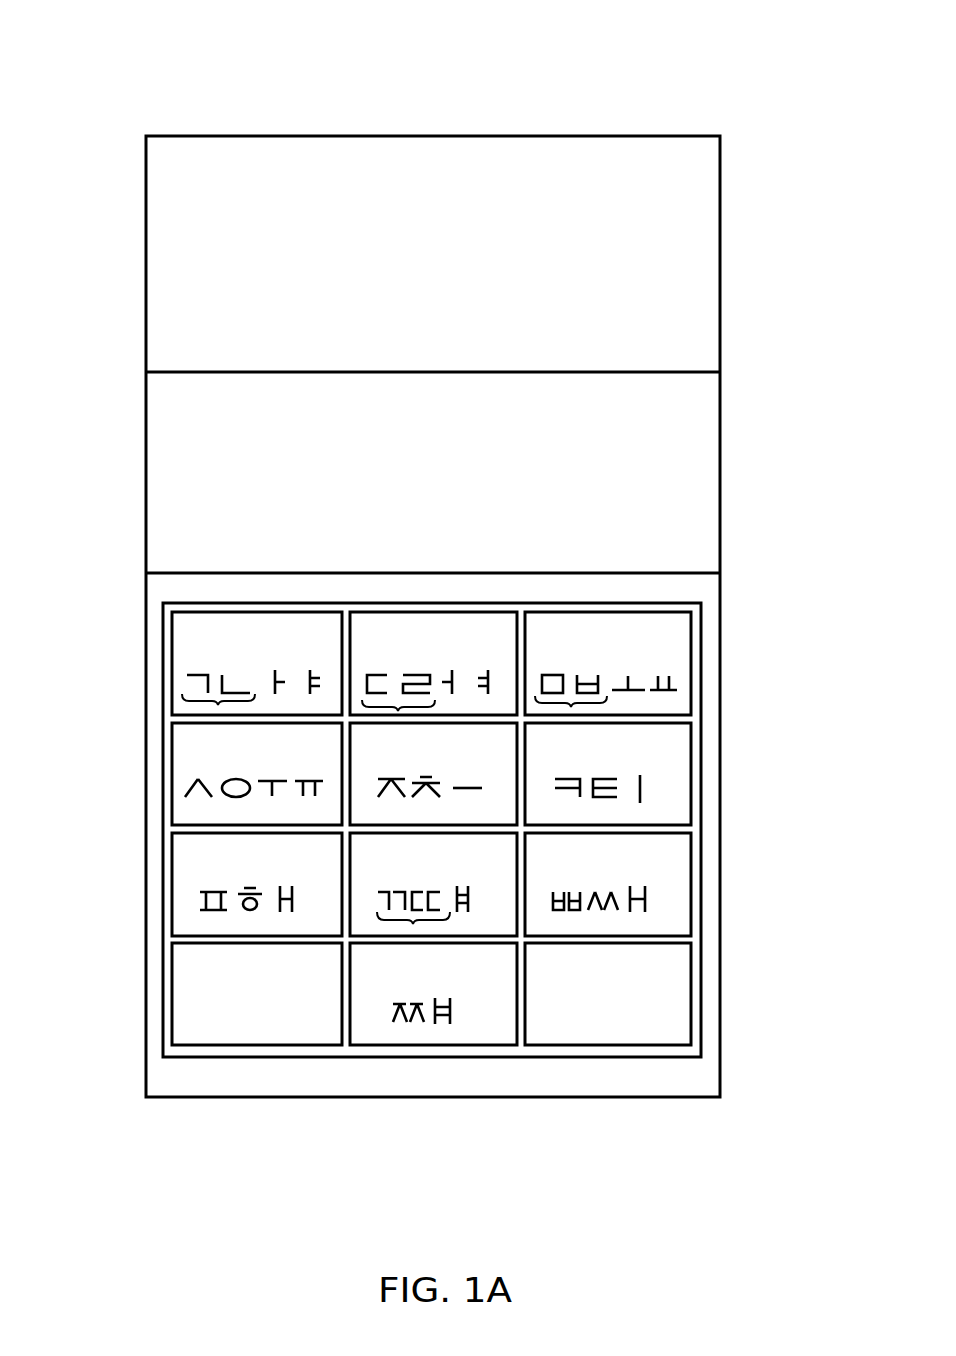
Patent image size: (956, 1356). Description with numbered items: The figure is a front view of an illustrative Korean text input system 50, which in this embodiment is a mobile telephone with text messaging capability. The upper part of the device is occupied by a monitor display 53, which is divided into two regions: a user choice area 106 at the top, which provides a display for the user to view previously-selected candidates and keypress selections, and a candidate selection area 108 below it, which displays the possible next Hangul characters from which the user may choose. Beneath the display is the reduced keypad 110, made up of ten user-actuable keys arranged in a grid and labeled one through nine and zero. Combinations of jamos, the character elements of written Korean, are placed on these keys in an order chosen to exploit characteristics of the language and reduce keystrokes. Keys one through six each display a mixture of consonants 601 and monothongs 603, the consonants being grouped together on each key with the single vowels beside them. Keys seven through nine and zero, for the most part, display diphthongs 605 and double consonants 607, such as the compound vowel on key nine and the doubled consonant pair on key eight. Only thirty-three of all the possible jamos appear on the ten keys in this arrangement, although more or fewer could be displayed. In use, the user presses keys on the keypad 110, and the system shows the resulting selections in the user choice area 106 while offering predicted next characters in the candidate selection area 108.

The Korean text input system 50 is at (297, 82).
The monitor display 53 is at (733, 127).
The user choice area 106 is at (413, 278).
The candidate selection area 108 is at (413, 500).
The reduced keypad 110 is at (146, 684).
The consonants 601 is at (216, 704).
The monothongs 603 is at (276, 672).
The diphthongs 605 is at (641, 908).
The double consonants 607 is at (413, 924).